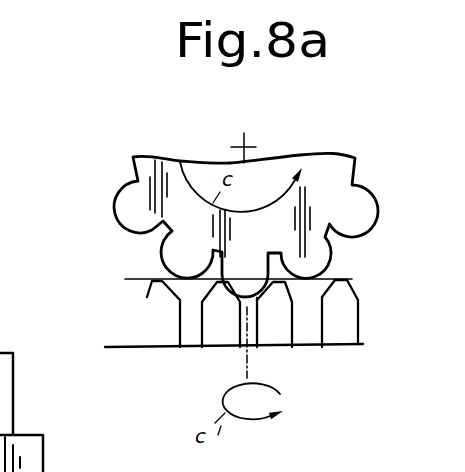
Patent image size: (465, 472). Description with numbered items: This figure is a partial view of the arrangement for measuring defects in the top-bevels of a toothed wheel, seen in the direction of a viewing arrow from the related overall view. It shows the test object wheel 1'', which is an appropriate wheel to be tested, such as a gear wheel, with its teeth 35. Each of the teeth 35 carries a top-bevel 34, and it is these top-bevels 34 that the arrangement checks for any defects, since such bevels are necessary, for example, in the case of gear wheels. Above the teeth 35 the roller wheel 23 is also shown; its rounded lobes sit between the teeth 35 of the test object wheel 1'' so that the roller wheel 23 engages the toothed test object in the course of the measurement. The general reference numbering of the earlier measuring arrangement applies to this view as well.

The roller wheel 23 is at (330, 207).
The top-bevels 34 is at (210, 291).
The teeth 35 is at (340, 323).
The test object wheel 1'' is at (234, 381).